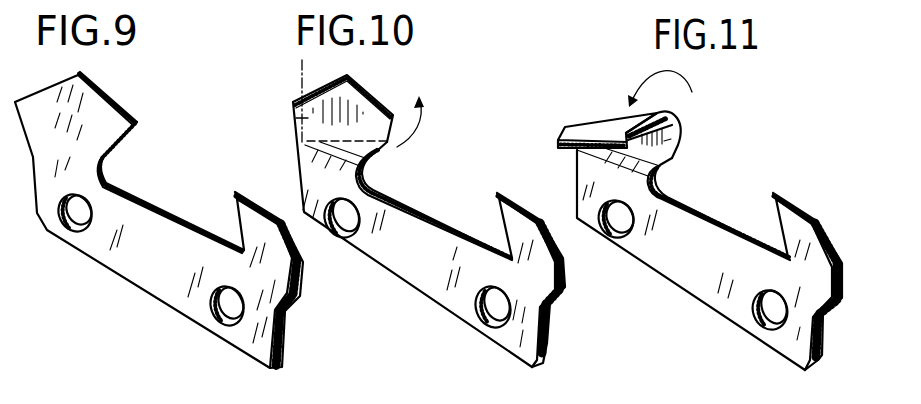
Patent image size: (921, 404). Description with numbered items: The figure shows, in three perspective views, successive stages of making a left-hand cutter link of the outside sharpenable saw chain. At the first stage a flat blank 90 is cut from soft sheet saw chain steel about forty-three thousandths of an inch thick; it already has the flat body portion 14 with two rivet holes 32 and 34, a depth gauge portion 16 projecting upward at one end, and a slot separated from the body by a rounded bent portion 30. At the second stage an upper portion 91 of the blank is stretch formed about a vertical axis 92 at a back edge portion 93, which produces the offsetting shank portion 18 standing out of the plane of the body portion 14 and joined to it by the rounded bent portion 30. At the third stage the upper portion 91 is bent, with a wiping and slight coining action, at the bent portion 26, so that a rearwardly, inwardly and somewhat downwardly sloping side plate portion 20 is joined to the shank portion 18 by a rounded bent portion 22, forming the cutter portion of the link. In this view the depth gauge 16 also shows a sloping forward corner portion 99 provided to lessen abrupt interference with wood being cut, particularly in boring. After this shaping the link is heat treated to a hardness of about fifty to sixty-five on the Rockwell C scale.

In FIG. 9, the body portion 14 is at (140, 262).
In FIG. 10, the body portion 14 is at (410, 273).
In FIG. 11, the body portion 14 is at (682, 267).
In FIG. 9, the depth gauge portion 16 is at (247, 222).
In FIG. 10, the depth gauge portion 16 is at (512, 232).
In FIG. 11, the depth gauge portion 16 is at (788, 232).
In FIG. 10, the offsetting shank portion 18 is at (372, 151).
In FIG. 11, the offsetting shank portion 18 is at (674, 158).
In FIG. 11, the side plate portion 20 is at (690, 137).
In FIG. 10, the rounded bent portion 22 is at (365, 143).
In FIG. 11, the rounded bent portion 22 is at (626, 134).
In FIG. 11, the bent portion 26 is at (684, 100).
In FIG. 9, the rounded bent portion 30 is at (171, 187).
In FIG. 10, the rounded bent portion 30 is at (330, 160).
In FIG. 11, the rounded bent portion 30 is at (620, 160).
In FIG. 9, the rivet hole 32 is at (70, 230).
In FIG. 10, the rivet hole 32 is at (352, 234).
In FIG. 11, the rivet hole 32 is at (618, 233).
In FIG. 9, the rivet hole 34 is at (222, 319).
In FIG. 10, the rivet hole 34 is at (483, 321).
In FIG. 11, the rivet hole 34 is at (762, 320).
In FIG. 9, the blank 90 is at (143, 149).
In FIG. 10, the upper portion 91 is at (308, 121).
In FIG. 10, the vertical axis 92 is at (302, 73).
In FIG. 10, the back edge portion 93 is at (303, 158).
In FIG. 11, the sloping forward corner portion 99 is at (832, 240).